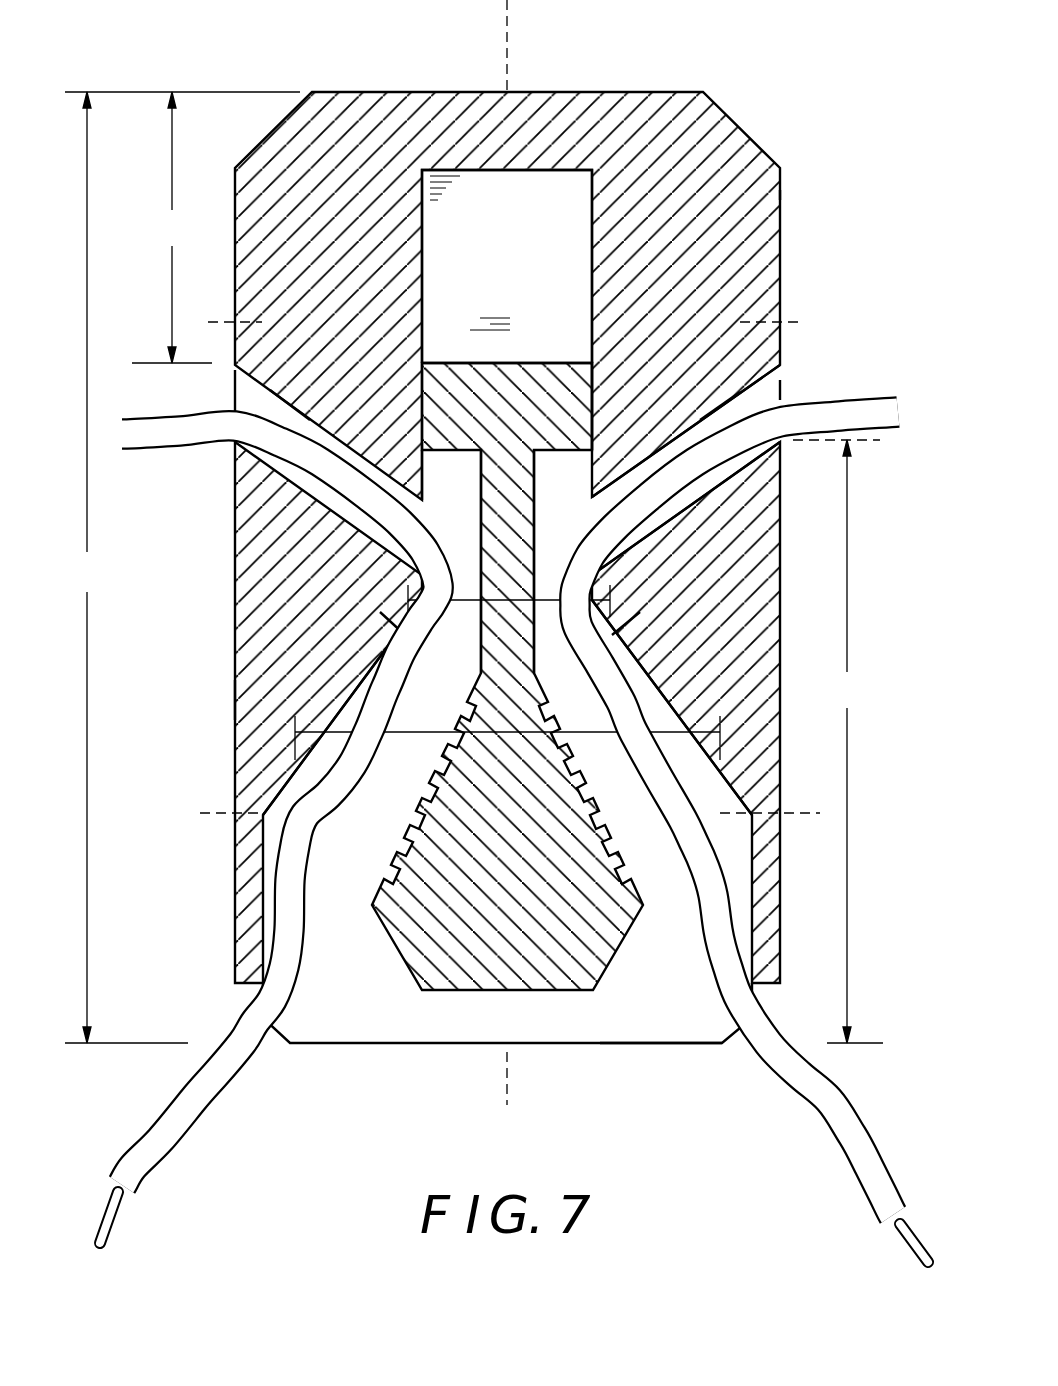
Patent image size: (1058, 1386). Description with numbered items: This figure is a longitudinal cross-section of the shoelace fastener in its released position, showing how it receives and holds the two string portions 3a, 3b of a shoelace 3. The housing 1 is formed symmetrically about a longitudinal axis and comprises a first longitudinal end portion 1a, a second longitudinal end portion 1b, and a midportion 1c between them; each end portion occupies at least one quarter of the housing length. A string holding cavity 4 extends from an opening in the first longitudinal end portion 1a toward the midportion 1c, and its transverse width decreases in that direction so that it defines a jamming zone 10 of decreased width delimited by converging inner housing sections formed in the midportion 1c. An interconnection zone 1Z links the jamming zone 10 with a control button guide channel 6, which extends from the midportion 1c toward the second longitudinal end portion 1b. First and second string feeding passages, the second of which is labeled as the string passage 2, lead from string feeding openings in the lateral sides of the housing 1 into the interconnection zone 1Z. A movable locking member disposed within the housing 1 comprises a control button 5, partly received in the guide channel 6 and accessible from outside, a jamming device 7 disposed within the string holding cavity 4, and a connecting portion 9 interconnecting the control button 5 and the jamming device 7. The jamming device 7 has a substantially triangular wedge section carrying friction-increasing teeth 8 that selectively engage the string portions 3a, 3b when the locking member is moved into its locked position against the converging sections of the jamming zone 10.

The housing 1 is at (474, 589).
The first longitudinal end portion 1a is at (413, 1010).
The second longitudinal end portion 1b is at (545, 327).
The midportion 1c is at (672, 570).
The neck region 1Z is at (565, 510).
The string passage 2 is at (784, 366).
The shoelace 3 is at (514, 837).
The string portion 3a is at (193, 1085).
The string portion 3b is at (782, 1068).
The string holding cavity 4 is at (684, 1000).
The control button 5 is at (458, 400).
The control button guide channel 6 is at (545, 283).
The jamming device 7 is at (512, 684).
The teeth 8 is at (566, 812).
The connecting portion 9 is at (508, 515).
The jamming zone 10 is at (385, 678).